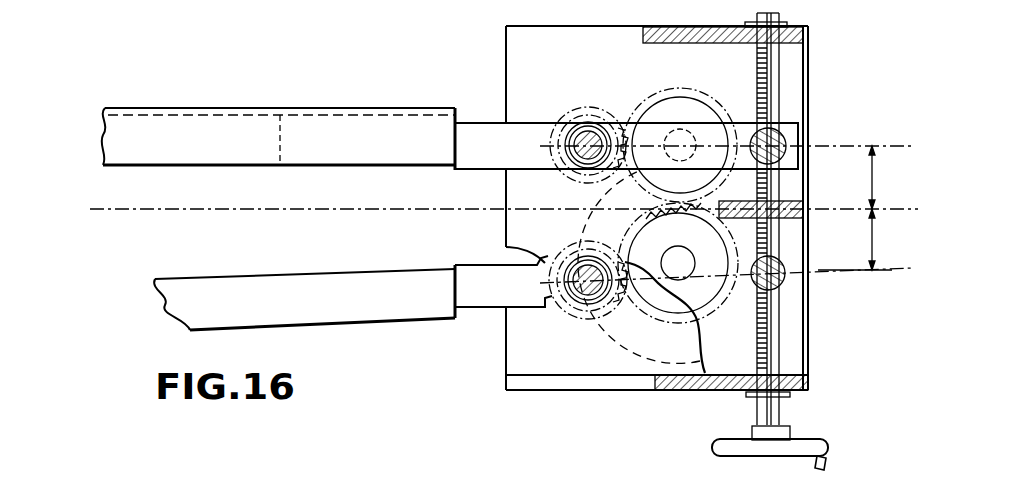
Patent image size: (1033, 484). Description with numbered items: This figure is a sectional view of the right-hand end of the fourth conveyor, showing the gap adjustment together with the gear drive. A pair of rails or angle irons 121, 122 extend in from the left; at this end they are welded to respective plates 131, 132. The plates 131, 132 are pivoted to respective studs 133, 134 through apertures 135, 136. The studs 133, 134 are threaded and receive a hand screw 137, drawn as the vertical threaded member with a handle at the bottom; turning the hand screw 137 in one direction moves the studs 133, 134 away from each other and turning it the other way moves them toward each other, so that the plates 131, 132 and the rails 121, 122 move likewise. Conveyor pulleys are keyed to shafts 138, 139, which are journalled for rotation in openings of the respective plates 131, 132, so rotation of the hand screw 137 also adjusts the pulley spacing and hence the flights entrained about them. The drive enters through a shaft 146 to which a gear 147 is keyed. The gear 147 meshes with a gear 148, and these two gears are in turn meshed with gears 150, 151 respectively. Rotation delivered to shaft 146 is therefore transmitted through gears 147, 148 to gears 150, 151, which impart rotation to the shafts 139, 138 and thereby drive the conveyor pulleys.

The rail 121 is at (228, 124).
The rail 122 is at (200, 298).
The plate 131 is at (477, 140).
The plate 132 is at (470, 302).
The stud 133 is at (808, 143).
The stud 134 is at (808, 246).
The aperture 135 is at (777, 127).
The aperture 136 is at (785, 290).
The hand screw 137 is at (780, 345).
The shaft 138 is at (588, 131).
The shaft 139 is at (587, 304).
The shaft 146 is at (682, 268).
The gear 147 is at (640, 212).
The gear 148 is at (655, 95).
The gear 150 is at (572, 318).
The gear 151 is at (558, 121).